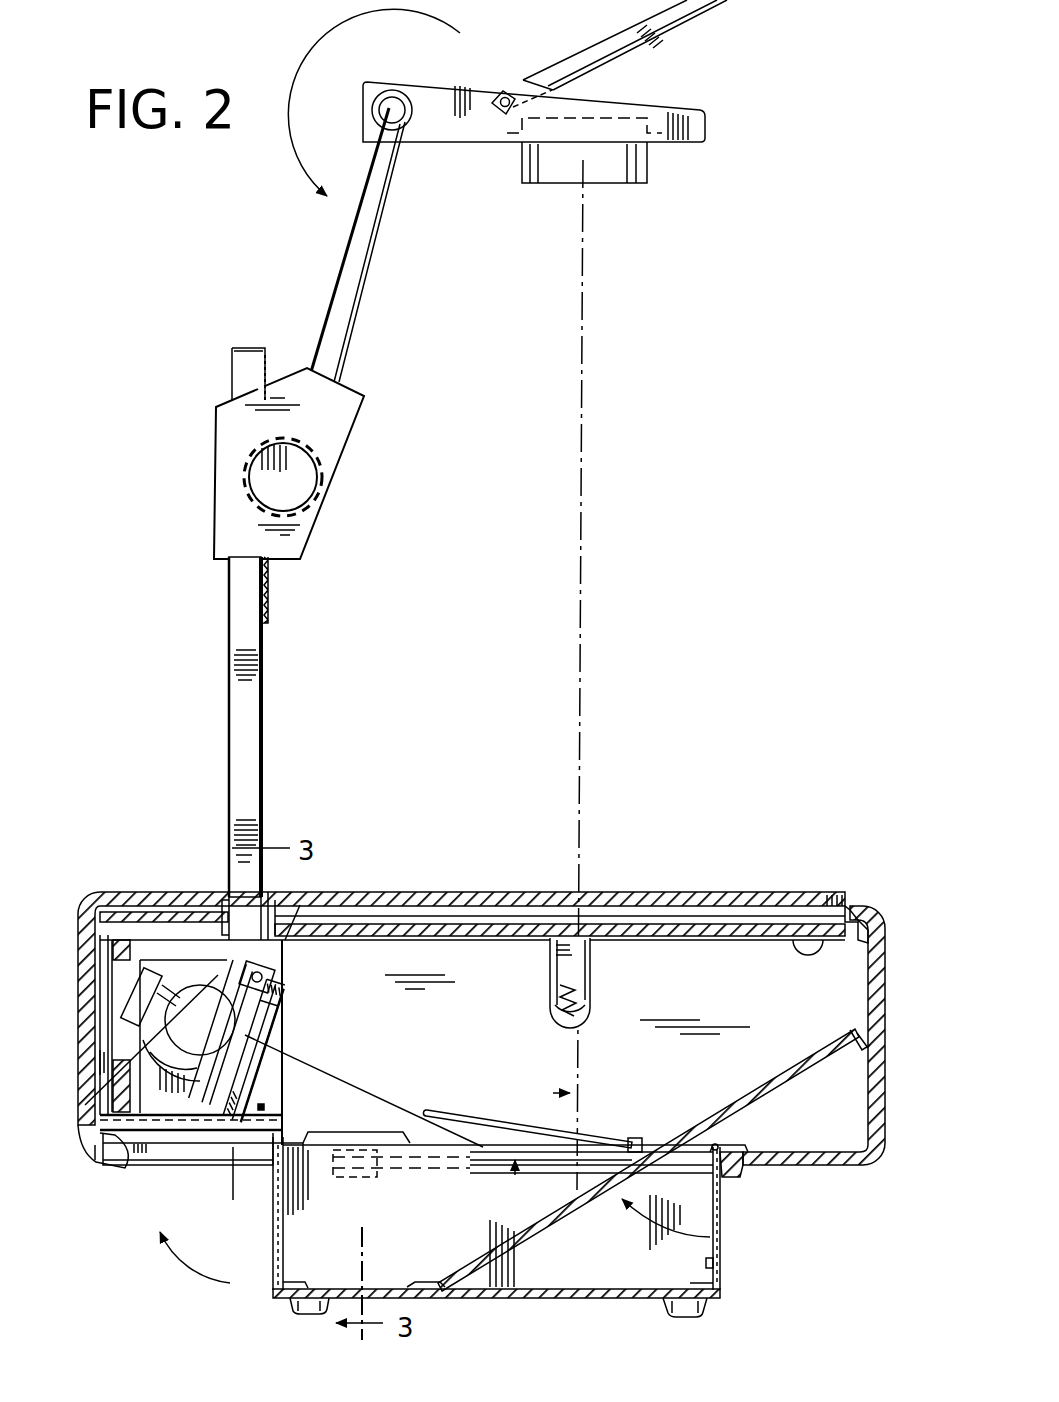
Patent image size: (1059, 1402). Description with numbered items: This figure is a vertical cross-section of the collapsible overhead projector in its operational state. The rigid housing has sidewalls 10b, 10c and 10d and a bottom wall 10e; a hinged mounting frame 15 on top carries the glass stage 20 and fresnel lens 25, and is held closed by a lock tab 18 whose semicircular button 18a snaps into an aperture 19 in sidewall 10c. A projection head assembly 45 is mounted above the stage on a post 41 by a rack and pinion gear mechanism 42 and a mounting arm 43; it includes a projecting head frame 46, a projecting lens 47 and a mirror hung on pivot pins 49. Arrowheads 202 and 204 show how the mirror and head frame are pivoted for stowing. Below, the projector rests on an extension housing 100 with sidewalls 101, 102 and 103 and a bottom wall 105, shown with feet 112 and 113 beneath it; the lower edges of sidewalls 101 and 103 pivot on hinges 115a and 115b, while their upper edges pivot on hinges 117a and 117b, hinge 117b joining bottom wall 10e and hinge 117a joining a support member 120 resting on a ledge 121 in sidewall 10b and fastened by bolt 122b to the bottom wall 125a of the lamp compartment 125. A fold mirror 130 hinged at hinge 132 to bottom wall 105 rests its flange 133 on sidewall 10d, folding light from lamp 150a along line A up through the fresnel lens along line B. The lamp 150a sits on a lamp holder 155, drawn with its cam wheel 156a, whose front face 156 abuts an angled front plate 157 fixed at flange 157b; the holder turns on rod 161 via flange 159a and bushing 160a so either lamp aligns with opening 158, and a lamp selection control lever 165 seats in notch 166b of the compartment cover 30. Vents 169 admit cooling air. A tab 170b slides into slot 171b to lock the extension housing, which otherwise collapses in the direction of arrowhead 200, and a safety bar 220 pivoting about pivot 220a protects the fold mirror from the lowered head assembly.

The sidewall 10b is at (82, 1078).
The sidewall 10c is at (473, 1039).
The sidewall 10d is at (890, 1152).
The bottom wall 10e is at (775, 1166).
The mounting frame 15 is at (867, 910).
The lock tab 18 is at (580, 977).
The semicircular button 18a is at (563, 1027).
The aperture 19 is at (557, 981).
The glass stage 20 is at (770, 903).
The fresnel lens 25 is at (665, 930).
The lamp housing compartment cover 30 is at (150, 893).
The post 41 is at (247, 732).
The rack and pinion gear mechanism 42 is at (335, 420).
The mounting arm 43 is at (353, 264).
The projection head assembly 45 is at (714, 138).
The projecting head frame 46 is at (693, 133).
The projecting lens 47 is at (614, 170).
The pivot pin 49 is at (505, 96).
The extension housing 100 is at (733, 1271).
The sidewall 101 is at (277, 1243).
The sidewall 102 is at (618, 1267).
The sidewall 103 is at (722, 1240).
The bottom wall 105 is at (557, 1298).
The left foot 112 is at (307, 1303).
The right foot 113 is at (690, 1308).
The hinge 115a is at (298, 1284).
The hinge 115b is at (710, 1283).
The hinge 117a is at (308, 1167).
The hinge 117b is at (741, 1148).
The support member 120 is at (158, 1167).
The ledge 121 is at (92, 1150).
The stop 122b is at (265, 1107).
The lamp compartment 125 is at (364, 1091).
The bottom wall 125a is at (235, 1165).
The fold mirror 130 is at (717, 1110).
The hinge 132 is at (437, 1282).
The flange 133 is at (857, 1043).
The lamp 150a is at (203, 997).
The lamp holder 155 is at (82, 1054).
The front face 156 is at (290, 1057).
The cam wheel 156a is at (202, 1020).
The angled front plate 157 is at (278, 1030).
The flange 157b is at (303, 896).
The opening 158 is at (193, 1091).
The flange 159a is at (275, 983).
The bushing 160a is at (284, 1013).
The rod 161 is at (273, 965).
The lamp selection control lever 165 is at (226, 888).
The notch 166b is at (285, 893).
The vents 169 is at (80, 1122).
The tab 170b is at (360, 1202).
The slot 171b is at (355, 1177).
The arrowhead 200 is at (230, 1283).
The arrowhead 202 is at (753, 58).
The arrowhead 204 is at (293, 72).
The safety bar 220 is at (452, 1113).
The pivot 220a is at (637, 1137).
The light path line A is at (413, 1106).
The light path line B is at (597, 516).